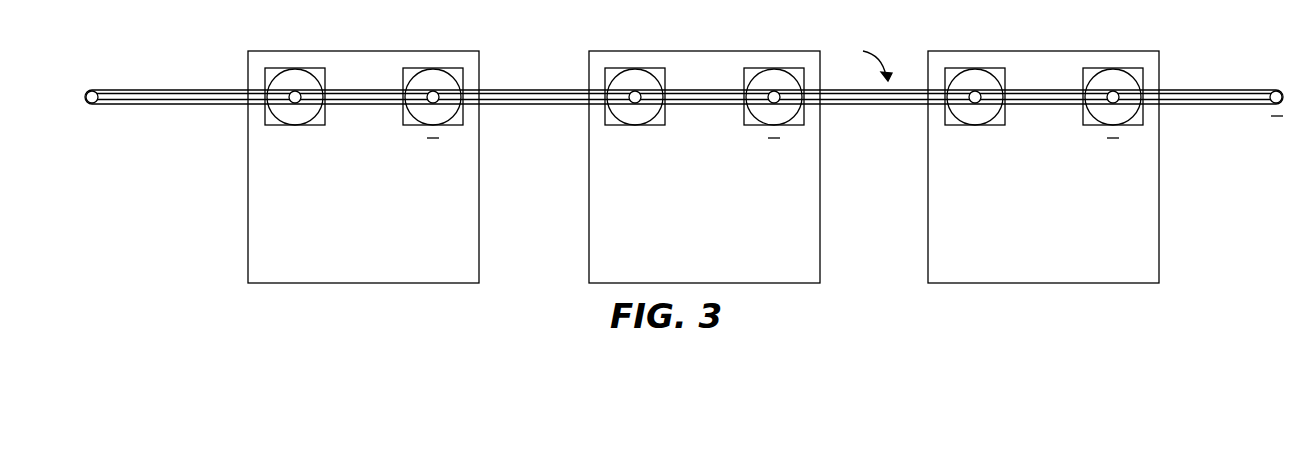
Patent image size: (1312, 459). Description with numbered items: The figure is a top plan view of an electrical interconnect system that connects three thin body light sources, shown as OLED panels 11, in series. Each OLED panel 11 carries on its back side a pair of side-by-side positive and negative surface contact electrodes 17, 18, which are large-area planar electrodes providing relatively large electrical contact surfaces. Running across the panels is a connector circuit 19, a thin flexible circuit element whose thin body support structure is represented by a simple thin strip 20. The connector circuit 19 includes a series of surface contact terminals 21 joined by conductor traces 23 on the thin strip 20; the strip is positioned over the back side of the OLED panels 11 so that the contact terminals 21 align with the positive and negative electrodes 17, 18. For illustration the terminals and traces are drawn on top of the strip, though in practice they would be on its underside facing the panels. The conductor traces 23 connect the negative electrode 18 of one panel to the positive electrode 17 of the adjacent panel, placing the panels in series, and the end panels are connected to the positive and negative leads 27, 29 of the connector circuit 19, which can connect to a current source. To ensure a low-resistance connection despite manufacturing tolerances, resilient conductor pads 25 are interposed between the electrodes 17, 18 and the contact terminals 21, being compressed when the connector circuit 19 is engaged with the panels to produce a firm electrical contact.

The OLED panel 11 is at (595, 50).
The positive surface contact electrode 17 is at (265, 112).
The negative surface contact electrode 18 is at (403, 112).
The connector circuit 19 is at (863, 61).
The thin strip 20 is at (697, 90).
The surface contact terminal 21 is at (433, 103).
The conductor trace 23 is at (489, 104).
The resilient conductor pad 25 is at (782, 115).
The positive lead 27 is at (92, 90).
The negative lead 29 is at (1276, 91).